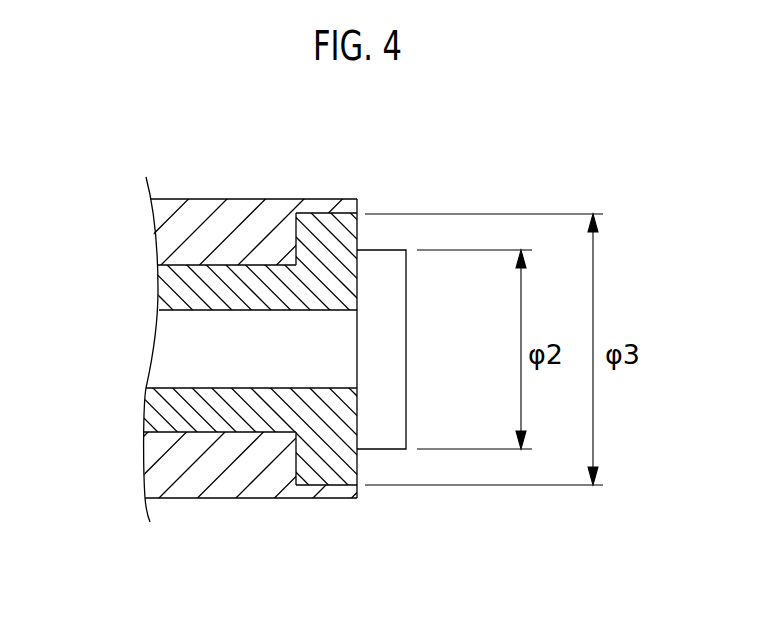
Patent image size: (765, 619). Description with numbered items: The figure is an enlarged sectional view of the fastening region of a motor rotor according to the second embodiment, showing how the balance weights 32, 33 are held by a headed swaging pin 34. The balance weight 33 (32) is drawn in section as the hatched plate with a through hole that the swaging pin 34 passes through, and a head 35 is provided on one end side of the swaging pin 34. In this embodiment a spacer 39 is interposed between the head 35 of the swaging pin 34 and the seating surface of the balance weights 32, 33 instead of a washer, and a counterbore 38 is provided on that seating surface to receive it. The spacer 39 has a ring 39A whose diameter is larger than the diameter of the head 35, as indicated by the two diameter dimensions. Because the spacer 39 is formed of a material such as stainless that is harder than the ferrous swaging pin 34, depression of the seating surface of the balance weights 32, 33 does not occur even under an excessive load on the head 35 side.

The balance weight 32 is at (382, 376).
The balance weight 33 is at (222, 480).
The headed swaging pin 34 is at (168, 347).
The head 35 is at (383, 347).
The counterbore 38 is at (305, 247).
The spacer 39 is at (343, 287).
The ring 39A is at (342, 217).